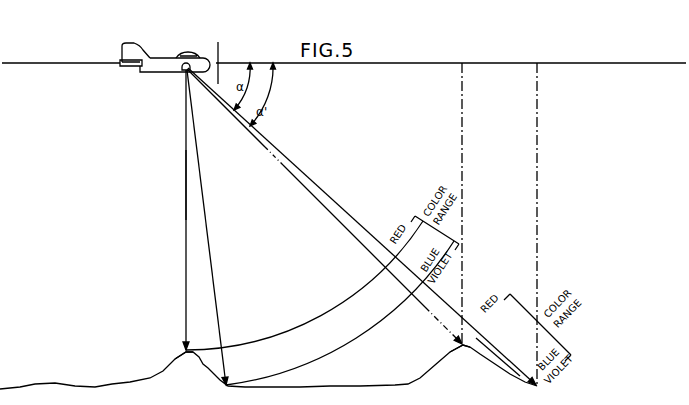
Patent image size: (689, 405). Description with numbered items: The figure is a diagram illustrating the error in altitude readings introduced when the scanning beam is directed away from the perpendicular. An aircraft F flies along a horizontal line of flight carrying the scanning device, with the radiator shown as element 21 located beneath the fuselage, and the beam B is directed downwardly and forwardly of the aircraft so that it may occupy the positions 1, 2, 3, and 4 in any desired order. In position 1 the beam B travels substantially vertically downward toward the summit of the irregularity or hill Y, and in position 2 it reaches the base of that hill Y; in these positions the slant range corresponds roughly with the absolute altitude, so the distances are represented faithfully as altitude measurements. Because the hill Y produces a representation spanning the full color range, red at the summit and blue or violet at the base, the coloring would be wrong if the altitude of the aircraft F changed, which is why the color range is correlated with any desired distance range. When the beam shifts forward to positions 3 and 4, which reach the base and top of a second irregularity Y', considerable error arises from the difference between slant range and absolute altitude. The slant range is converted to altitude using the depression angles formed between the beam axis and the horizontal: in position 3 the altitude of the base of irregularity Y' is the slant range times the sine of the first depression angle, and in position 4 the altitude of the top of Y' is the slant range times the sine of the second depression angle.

The beam position 1 is at (185, 210).
The beam position 2 is at (207, 227).
The beam position 3 is at (362, 226).
The beam position 4 is at (324, 206).
The sensor/detector on aircraft 21 is at (183, 66).
The aircraft F is at (162, 56).
The beam B is at (185, 183).
The irregularity or hill Y is at (168, 347).
The irregularity Y' is at (447, 343).